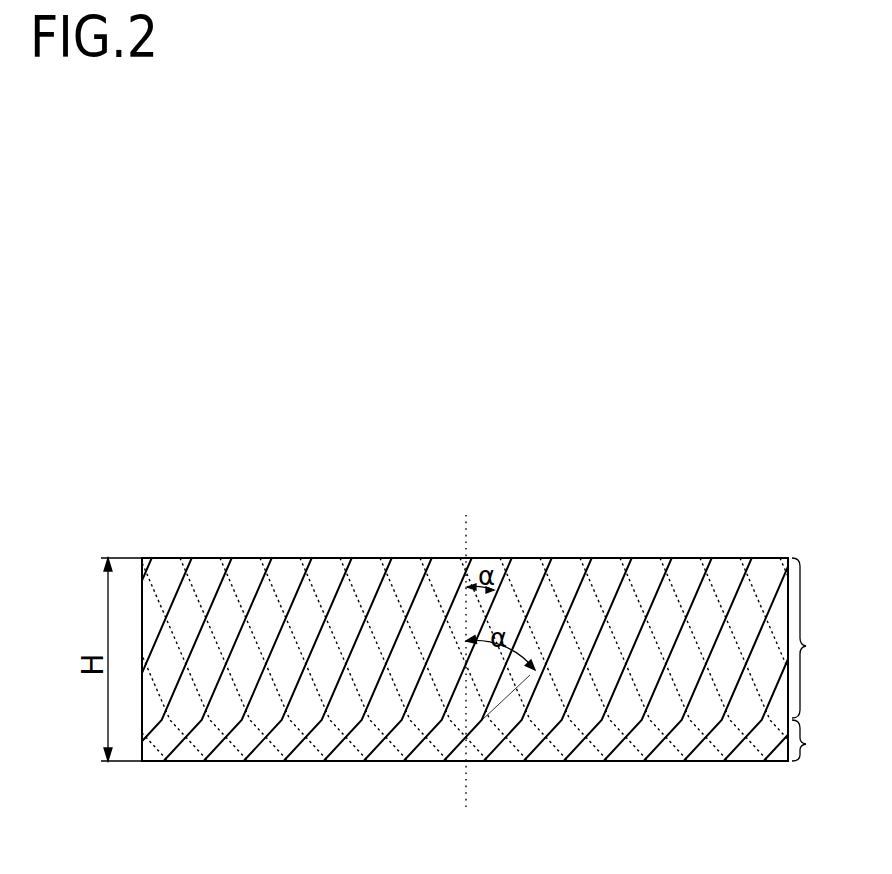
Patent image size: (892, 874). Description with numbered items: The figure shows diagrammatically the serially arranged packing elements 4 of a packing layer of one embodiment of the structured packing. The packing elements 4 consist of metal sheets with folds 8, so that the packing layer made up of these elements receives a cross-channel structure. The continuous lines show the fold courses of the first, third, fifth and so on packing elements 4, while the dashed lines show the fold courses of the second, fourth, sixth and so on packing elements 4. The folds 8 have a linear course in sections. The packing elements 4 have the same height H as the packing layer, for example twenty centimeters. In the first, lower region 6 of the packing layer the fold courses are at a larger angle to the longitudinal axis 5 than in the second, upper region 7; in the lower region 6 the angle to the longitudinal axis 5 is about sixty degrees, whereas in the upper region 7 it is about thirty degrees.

The packing element 4 is at (205, 557).
The longitudinal axis 5 is at (467, 533).
The first, lower region 6 is at (809, 742).
The second, upper region 7 is at (809, 638).
The folds 8 is at (700, 568).